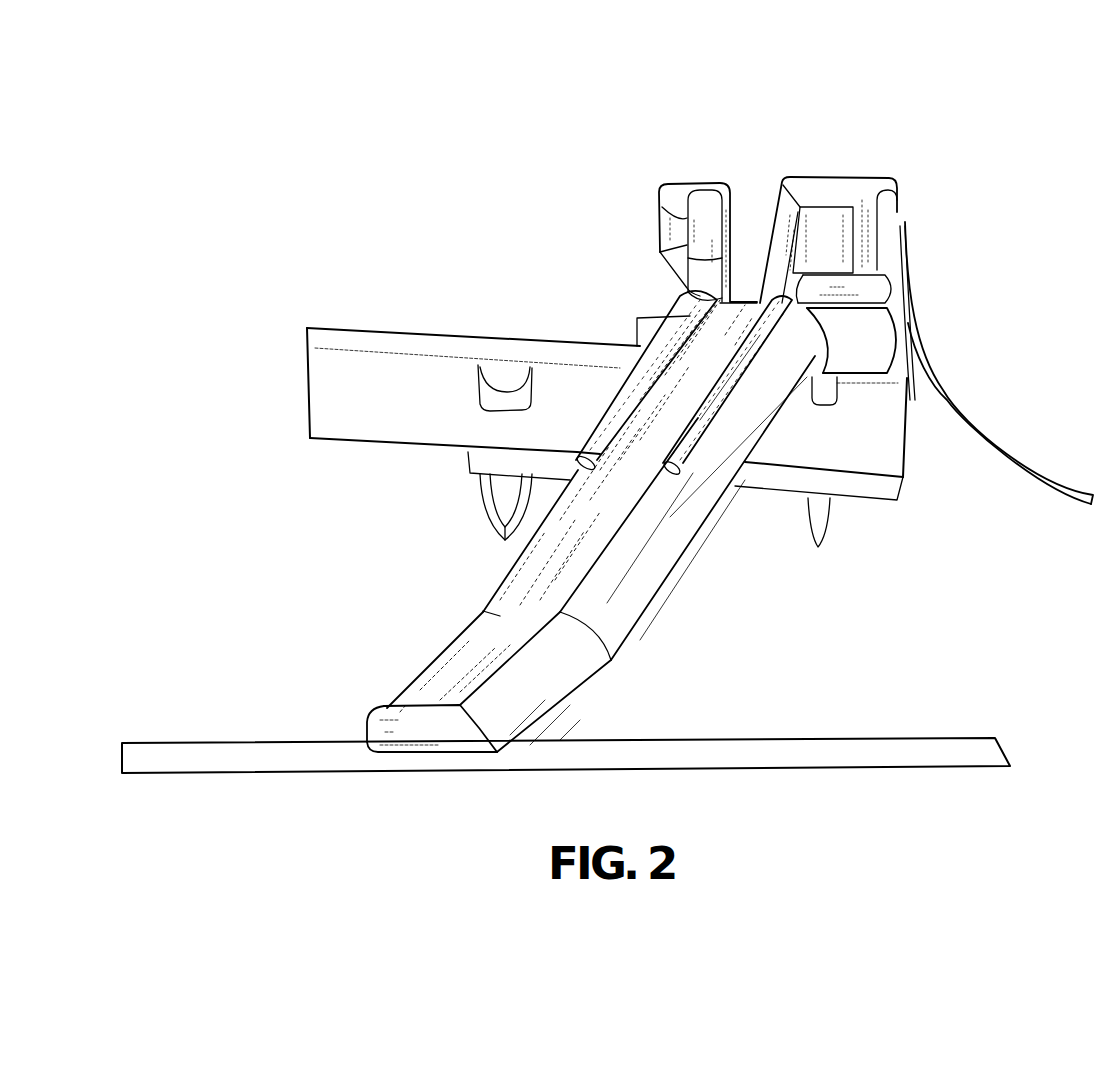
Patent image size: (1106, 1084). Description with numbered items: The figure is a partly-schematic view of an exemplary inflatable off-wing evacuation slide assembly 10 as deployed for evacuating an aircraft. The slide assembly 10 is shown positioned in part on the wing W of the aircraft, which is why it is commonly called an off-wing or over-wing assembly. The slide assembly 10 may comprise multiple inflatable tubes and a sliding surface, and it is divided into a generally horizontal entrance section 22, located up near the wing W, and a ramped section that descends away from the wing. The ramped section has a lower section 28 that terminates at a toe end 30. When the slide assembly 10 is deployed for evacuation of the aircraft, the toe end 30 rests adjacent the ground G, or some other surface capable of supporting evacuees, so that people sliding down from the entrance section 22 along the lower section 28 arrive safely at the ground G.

The evacuation slide assembly 10 is at (674, 418).
The entrance section 22 is at (958, 255).
The lower section 28 is at (613, 658).
The toe end 30 is at (387, 728).
The wing W is at (357, 400).
The ground G is at (182, 773).